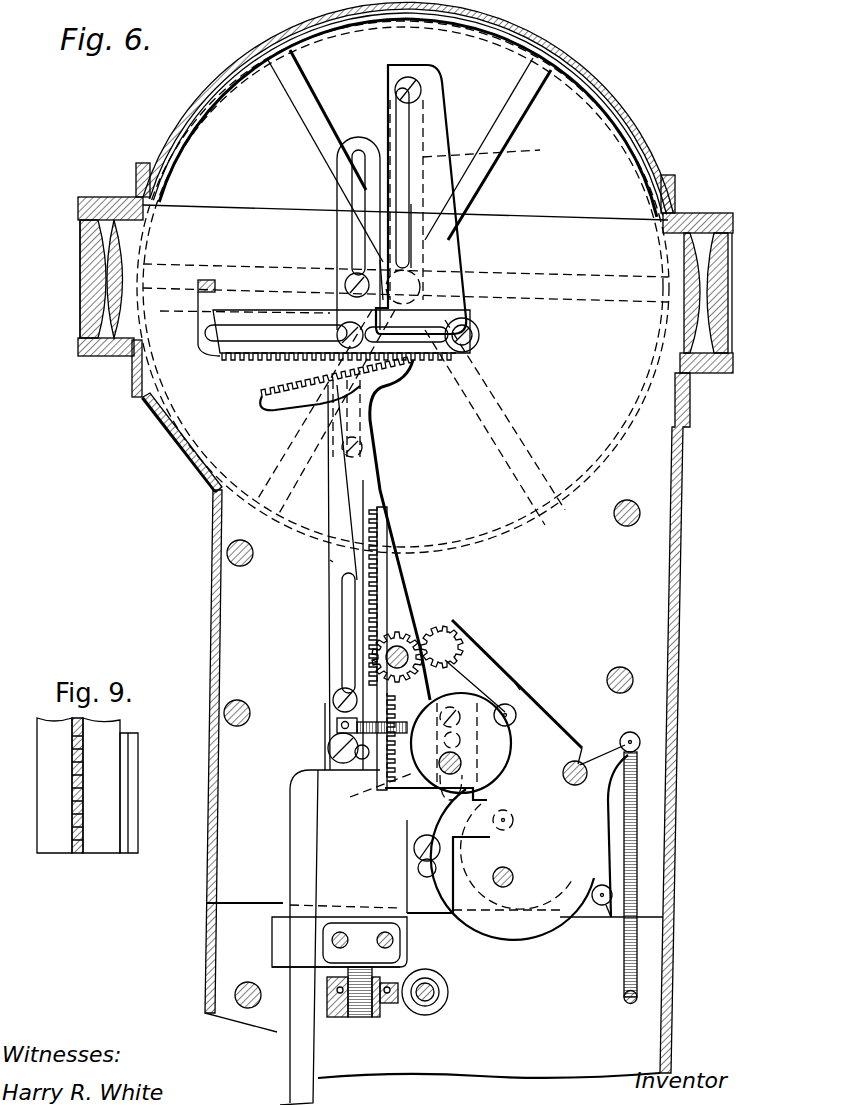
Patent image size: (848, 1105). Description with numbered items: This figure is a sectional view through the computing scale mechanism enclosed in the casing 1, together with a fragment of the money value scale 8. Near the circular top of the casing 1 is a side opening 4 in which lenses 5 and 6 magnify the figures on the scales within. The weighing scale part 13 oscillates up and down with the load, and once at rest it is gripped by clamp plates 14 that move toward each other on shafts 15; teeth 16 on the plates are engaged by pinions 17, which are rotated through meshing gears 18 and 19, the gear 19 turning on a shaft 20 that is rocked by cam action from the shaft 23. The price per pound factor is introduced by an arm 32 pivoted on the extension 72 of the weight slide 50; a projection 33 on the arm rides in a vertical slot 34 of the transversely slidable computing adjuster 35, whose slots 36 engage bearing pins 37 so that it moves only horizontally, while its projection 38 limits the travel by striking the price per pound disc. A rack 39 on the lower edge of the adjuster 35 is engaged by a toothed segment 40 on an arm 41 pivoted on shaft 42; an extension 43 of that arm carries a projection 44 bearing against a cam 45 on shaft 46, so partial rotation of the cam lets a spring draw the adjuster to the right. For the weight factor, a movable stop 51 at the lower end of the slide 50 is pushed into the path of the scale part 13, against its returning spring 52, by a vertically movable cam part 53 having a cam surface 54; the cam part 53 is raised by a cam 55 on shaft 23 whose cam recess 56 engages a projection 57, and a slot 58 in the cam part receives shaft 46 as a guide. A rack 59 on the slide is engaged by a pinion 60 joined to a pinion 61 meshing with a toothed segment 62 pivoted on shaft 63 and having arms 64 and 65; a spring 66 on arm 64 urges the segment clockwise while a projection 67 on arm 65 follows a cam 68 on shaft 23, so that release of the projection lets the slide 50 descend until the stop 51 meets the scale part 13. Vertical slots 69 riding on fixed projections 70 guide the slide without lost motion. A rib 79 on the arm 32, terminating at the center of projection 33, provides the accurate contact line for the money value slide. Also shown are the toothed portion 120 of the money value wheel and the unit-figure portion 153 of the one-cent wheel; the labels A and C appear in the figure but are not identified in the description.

In FIG. 6, the casing 1 is at (212, 536).
In FIG. 6, the side opening 4 is at (78, 212).
In FIG. 6, the lens 5 is at (100, 312).
In FIG. 6, the lens 6 is at (80, 243).
In FIG. 6, the money value scale 8 is at (420, 17).
In FIG. 9, the money value scale 8 is at (48, 853).
In FIG. 6, the scale part 13 is at (287, 828).
In FIG. 6, the clamp plates 14 is at (318, 923).
In FIG. 6, the shafts 15 is at (385, 933).
In FIG. 6, the teeth 16 is at (310, 967).
In FIG. 6, the pinions 17 is at (360, 1018).
In FIG. 6, the gear 18 is at (393, 1006).
In FIG. 6, the gear 19 is at (428, 1016).
In FIG. 6, the shaft 20 is at (432, 988).
In FIG. 6, the shaft 23 is at (507, 880).
In FIG. 6, the arm 32 is at (409, 156).
In FIG. 6, the projection 33 is at (417, 86).
In FIG. 6, the vertical slot 34 is at (412, 204).
In FIG. 6, the computing adjuster 35 is at (478, 316).
In FIG. 6, the slots 36 is at (233, 338).
In FIG. 6, the bearing pins 37 is at (377, 370).
In FIG. 6, the projection 38 is at (207, 283).
In FIG. 6, the rack 39 is at (263, 358).
In FIG. 6, the toothed segment 40 is at (262, 396).
In FIG. 6, the arm 41 is at (388, 501).
In FIG. 6, the shaft 42 is at (415, 640).
In FIG. 6, the extension 43 is at (462, 666).
In FIG. 6, the projection 44 is at (509, 704).
In FIG. 6, the cam 45 is at (511, 745).
In FIG. 6, the shaft 46 is at (437, 790).
In FIG. 6, the weight slide 50 is at (333, 562).
In FIG. 6, the movable stop 51 is at (329, 736).
In FIG. 6, the returning spring 52 is at (340, 720).
In FIG. 6, the cam part 53 is at (414, 845).
In FIG. 6, the cam surface 54 is at (367, 791).
In FIG. 6, the cam 55 is at (497, 940).
In FIG. 6, the cam recess 56 is at (524, 852).
In FIG. 6, the projection 57 is at (516, 851).
In FIG. 6, the slot 58 is at (464, 743).
In FIG. 6, the rack 59 is at (390, 562).
In FIG. 6, the pinion 60 is at (447, 647).
In FIG. 6, the pinion 61 is at (372, 662).
In FIG. 6, the toothed segment 62 is at (456, 622).
In FIG. 6, the shaft 63 is at (586, 768).
In FIG. 6, the arm 64 is at (633, 733).
In FIG. 6, the arm 65 is at (603, 906).
In FIG. 6, the spring 66 is at (642, 797).
In FIG. 6, the projection 67 is at (610, 920).
In FIG. 6, the cam 68 is at (560, 920).
In FIG. 6, the vertical slots 69 is at (350, 187).
In FIG. 6, the projections 70 is at (352, 278).
In FIG. 6, the extension 72 is at (380, 260).
In FIG. 6, the rib 79 is at (402, 150).
In FIG. 9, the toothed portion 120 is at (78, 853).
In FIG. 9, the unit figures portion 153 is at (130, 853).
In FIG. 6, the sector plate A is at (446, 120).
In FIG. 6, the lever C is at (513, 680).